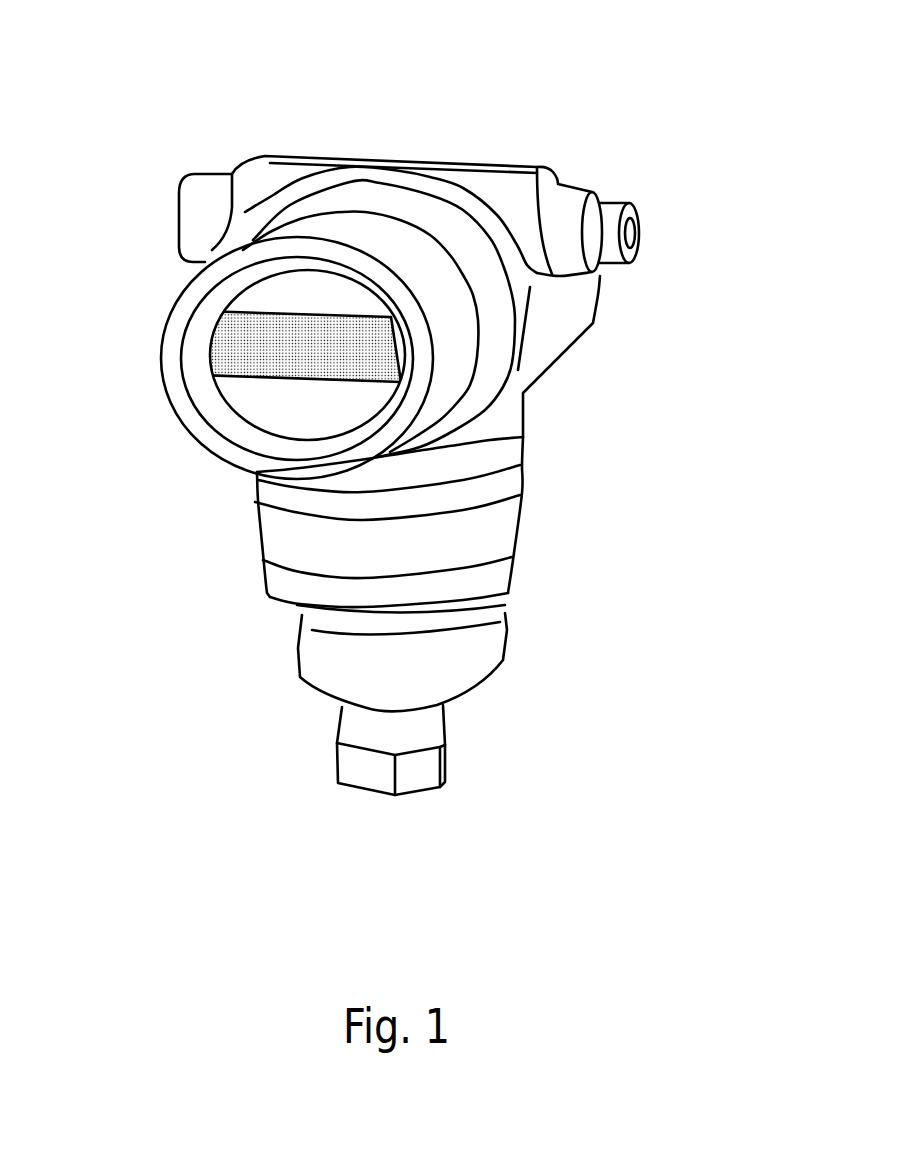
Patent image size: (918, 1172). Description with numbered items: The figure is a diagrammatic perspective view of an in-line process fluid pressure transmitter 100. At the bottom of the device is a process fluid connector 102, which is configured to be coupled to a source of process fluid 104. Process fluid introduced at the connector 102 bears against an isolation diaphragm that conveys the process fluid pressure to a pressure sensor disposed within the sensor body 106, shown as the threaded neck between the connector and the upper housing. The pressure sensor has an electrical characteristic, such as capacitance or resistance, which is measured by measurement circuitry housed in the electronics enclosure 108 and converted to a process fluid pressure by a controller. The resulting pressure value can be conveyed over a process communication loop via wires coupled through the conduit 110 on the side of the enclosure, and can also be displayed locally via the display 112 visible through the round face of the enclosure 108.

The pressure transmitter 100 is at (672, 77).
The process fluid connector 102 is at (447, 762).
The source of process fluid 104 is at (406, 830).
The sensor body 106 is at (538, 532).
The electronics enclosure 108 is at (590, 323).
The conduit 110 is at (178, 215).
The display 112 is at (322, 362).